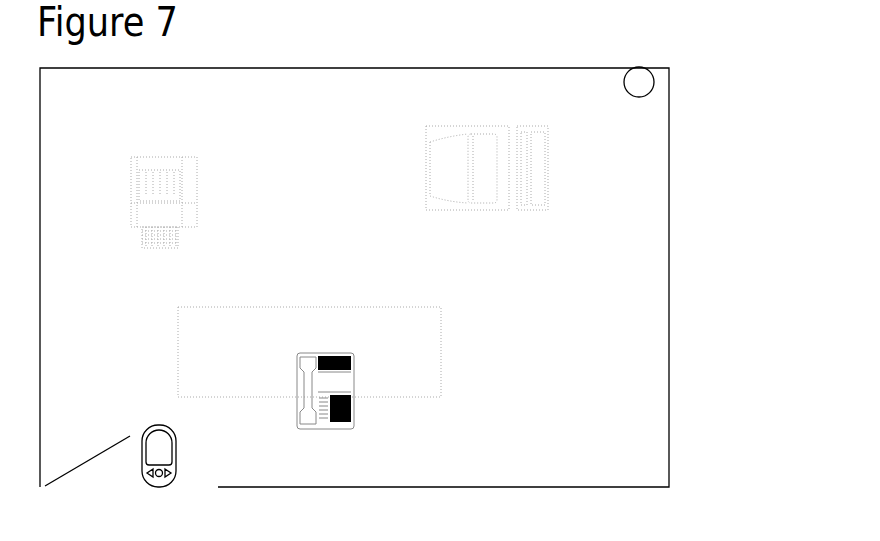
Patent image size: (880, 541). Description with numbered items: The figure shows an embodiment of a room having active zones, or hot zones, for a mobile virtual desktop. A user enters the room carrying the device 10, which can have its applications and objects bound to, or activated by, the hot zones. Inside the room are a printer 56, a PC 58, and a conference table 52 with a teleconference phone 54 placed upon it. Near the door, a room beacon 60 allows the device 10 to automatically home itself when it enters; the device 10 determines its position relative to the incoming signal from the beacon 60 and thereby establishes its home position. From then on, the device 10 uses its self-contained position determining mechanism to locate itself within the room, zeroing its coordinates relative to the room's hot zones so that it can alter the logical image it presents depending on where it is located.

The device 10 is at (178, 466).
The conference table 52 is at (441, 322).
The teleconference phone 54 is at (352, 386).
The printer 56 is at (197, 187).
The PC 58 is at (548, 140).
The room beacon 60 is at (641, 68).